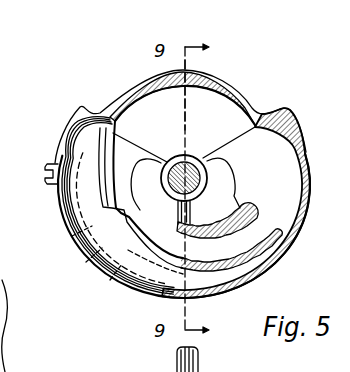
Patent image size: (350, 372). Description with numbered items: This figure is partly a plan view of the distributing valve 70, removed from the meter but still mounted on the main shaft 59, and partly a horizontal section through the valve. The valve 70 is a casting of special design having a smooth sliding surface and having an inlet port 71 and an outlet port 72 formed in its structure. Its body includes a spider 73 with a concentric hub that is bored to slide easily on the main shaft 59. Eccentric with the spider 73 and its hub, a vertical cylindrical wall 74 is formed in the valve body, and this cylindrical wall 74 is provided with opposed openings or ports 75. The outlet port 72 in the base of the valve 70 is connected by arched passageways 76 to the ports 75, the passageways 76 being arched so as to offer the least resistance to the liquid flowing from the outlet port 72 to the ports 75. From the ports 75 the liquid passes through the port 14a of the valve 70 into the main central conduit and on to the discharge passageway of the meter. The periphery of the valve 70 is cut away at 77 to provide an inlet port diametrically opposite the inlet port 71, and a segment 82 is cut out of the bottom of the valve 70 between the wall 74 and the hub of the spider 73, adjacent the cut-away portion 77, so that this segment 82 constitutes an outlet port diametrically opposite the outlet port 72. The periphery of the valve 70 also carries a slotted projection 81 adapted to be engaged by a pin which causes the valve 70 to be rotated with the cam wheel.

The port 14a is at (220, 193).
The main shaft 59 is at (180, 162).
The valve 70 is at (90, 263).
The inlet port 71 is at (189, 230).
The outlet port 72 is at (245, 264).
The spider 73 is at (185, 153).
The cylindrical wall 74 is at (218, 80).
The ports 75 is at (211, 203).
The arched passageways 76 is at (88, 215).
The cut away portion 77 is at (147, 82).
The slotted projection 81 is at (53, 163).
The cut out segment 82 is at (186, 95).